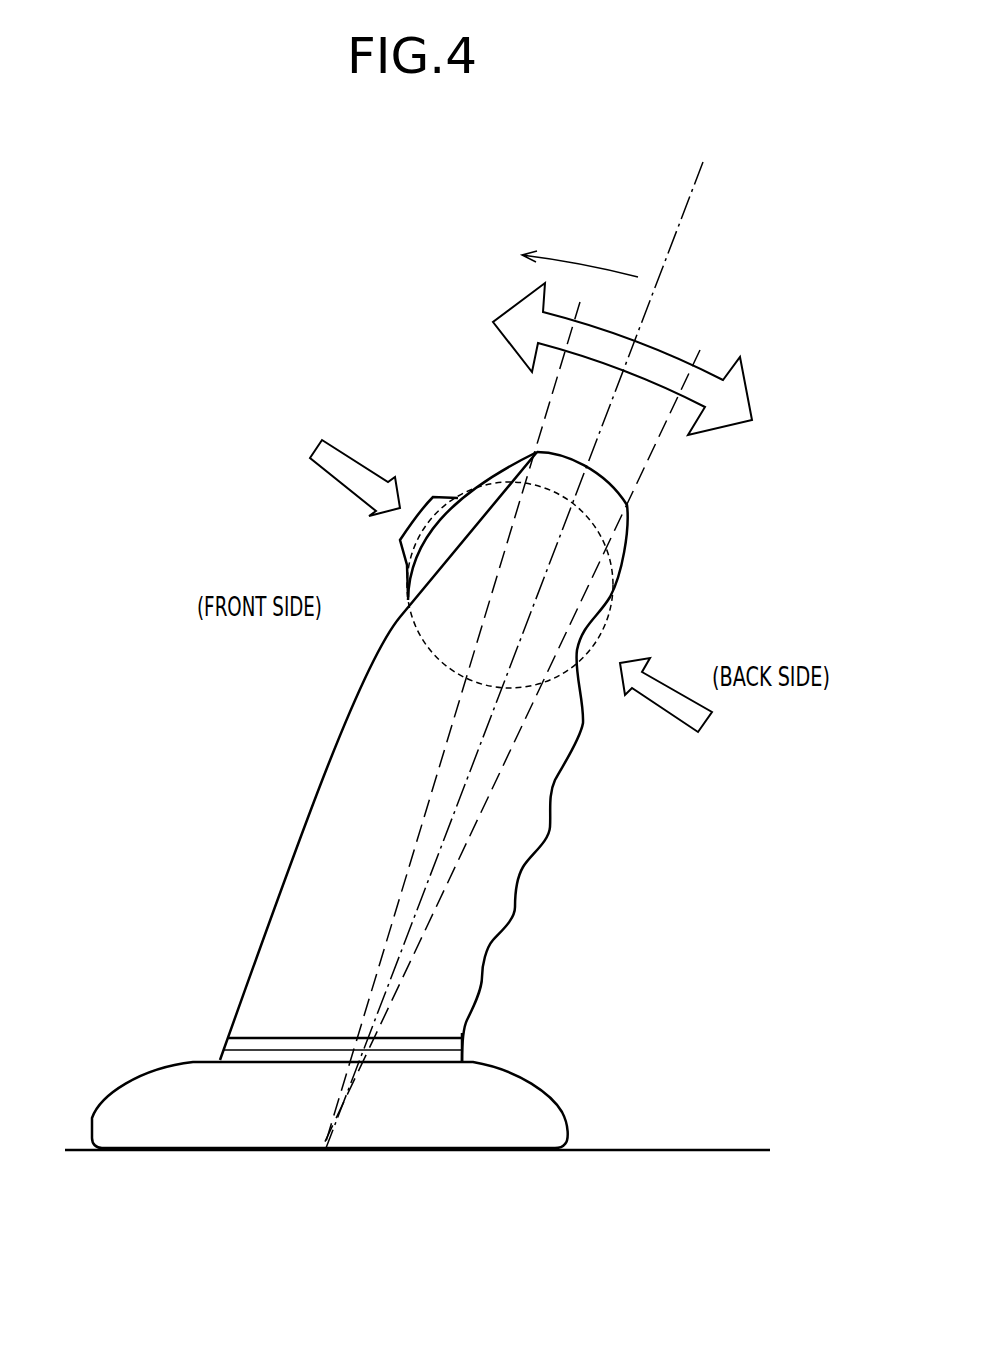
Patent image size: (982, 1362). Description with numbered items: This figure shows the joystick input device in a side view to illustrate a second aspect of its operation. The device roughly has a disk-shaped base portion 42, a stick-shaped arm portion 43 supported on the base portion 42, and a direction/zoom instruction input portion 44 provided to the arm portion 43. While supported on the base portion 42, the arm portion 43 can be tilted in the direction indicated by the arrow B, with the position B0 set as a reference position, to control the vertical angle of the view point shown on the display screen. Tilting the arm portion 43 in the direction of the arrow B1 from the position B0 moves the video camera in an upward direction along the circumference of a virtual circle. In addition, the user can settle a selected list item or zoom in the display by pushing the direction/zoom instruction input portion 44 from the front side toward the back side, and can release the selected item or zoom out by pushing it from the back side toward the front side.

The base portion 42 is at (145, 1088).
The arm portion 43 is at (303, 827).
The direction/zoom instruction input portion 44 is at (470, 517).
The arrow B is at (662, 355).
The position B0 is at (690, 200).
The arrow B1 is at (585, 260).